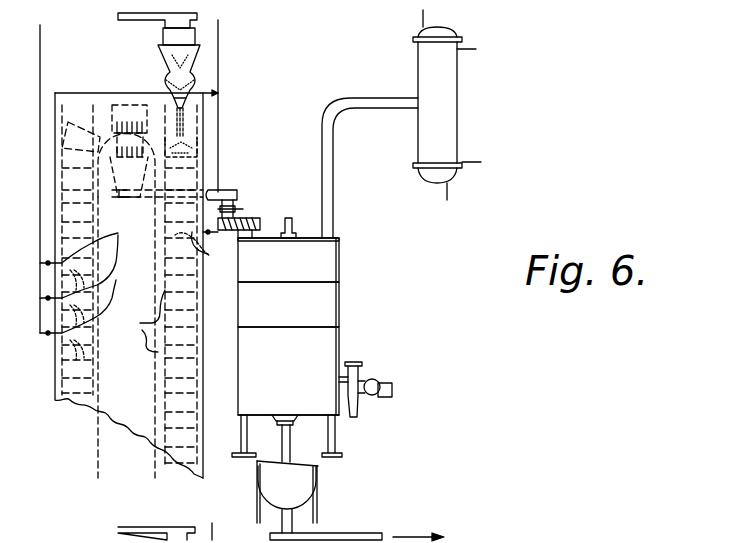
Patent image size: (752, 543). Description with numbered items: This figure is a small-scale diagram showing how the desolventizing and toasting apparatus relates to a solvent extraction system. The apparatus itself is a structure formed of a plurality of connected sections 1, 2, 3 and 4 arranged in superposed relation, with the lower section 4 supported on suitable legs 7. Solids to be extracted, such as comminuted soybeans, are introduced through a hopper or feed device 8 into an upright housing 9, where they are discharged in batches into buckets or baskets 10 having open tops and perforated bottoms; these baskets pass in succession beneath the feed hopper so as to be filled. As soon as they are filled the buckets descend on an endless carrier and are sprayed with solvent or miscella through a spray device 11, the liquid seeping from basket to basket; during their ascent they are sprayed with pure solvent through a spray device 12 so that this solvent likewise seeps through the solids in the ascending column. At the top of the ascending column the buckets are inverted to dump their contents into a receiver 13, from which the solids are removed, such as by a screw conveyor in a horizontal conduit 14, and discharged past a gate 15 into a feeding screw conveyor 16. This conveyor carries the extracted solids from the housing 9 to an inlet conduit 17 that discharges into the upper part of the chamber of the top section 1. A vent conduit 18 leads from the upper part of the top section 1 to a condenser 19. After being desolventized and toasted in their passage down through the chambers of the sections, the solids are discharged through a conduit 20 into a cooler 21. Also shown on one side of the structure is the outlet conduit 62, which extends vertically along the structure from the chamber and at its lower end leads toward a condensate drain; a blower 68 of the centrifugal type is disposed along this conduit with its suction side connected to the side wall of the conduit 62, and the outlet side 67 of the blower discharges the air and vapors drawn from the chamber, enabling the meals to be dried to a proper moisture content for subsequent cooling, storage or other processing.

The top section 1 is at (336, 260).
The section 2 is at (330, 302).
The section 3 is at (325, 340).
The lower section 4 is at (332, 410).
The legs 7 is at (238, 443).
The hopper or feed device 8 is at (160, 52).
The upright housing 9 is at (80, 93).
The buckets or baskets 10 is at (140, 321).
The spray device 11 is at (202, 257).
The spray device 12 is at (103, 294).
The receiver 13 is at (121, 194).
The horizontal conduit 14 is at (222, 190).
The gate 15 is at (240, 207).
The feeding screw conveyor 16 is at (252, 222).
The inlet conduit 17 is at (270, 236).
The vent conduit 18 is at (340, 97).
The condenser 19 is at (454, 100).
The conduit 20 is at (283, 442).
The cooler 21 is at (308, 486).
The outlet conduit 62 is at (362, 370).
The outlet side of blower 67 is at (392, 402).
The blower 68 is at (380, 382).